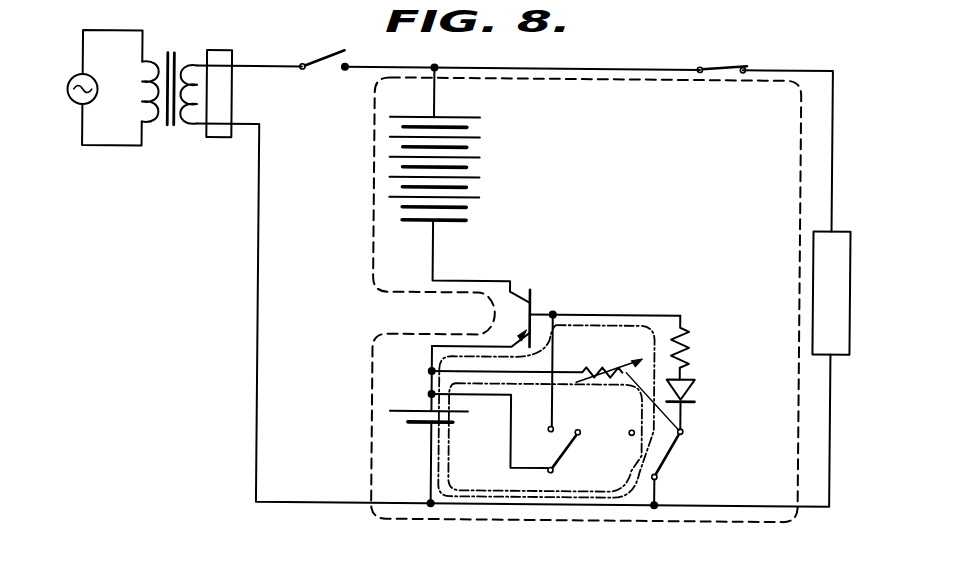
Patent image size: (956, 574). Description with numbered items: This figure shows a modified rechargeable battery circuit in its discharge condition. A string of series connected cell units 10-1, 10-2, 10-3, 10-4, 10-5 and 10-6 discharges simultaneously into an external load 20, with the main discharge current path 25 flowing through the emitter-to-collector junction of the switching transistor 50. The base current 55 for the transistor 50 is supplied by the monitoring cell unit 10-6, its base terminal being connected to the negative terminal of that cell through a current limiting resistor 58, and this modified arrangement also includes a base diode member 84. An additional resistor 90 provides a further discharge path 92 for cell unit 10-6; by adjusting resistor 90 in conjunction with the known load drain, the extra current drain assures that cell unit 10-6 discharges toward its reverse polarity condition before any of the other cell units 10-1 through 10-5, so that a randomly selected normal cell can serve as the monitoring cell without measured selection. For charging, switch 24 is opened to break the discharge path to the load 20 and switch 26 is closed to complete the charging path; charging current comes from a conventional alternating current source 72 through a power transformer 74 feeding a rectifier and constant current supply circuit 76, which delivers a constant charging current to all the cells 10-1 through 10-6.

The alternating current source 72 is at (105, 88).
The power transformer 74 is at (171, 57).
The rectifier and constant current supply circuit 76 is at (212, 54).
The switch 26 is at (326, 55).
The switch 24 is at (736, 65).
The main discharge current path 25 is at (651, 80).
The external load 20 is at (844, 228).
The cell unit 10-1 is at (475, 128).
The cell unit 10-2 is at (475, 149).
The cell unit 10-3 is at (475, 168).
The cell unit 10-4 is at (471, 190).
The cell unit 10-5 is at (469, 210).
The monitoring cell unit 10-6 is at (419, 436).
The transistor 50 is at (542, 300).
The base current path 55 is at (588, 322).
The resistor 90 is at (630, 350).
The current limiting resistor 58 is at (690, 350).
The base diode member 84 is at (698, 388).
The additional discharge path 92 is at (612, 478).